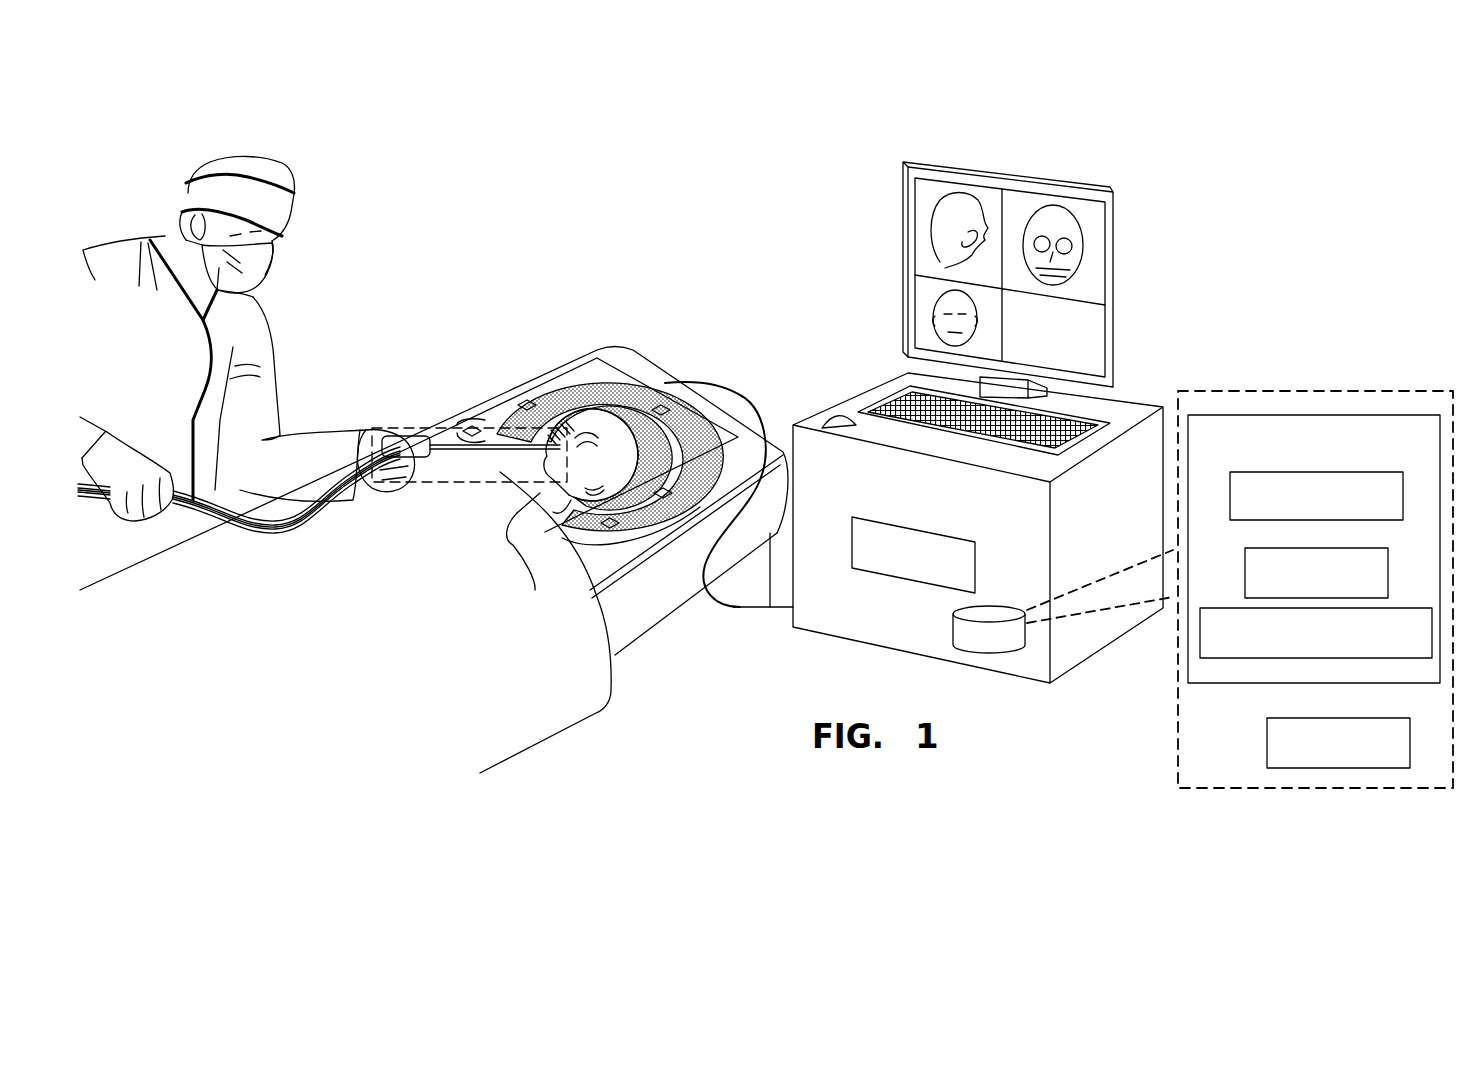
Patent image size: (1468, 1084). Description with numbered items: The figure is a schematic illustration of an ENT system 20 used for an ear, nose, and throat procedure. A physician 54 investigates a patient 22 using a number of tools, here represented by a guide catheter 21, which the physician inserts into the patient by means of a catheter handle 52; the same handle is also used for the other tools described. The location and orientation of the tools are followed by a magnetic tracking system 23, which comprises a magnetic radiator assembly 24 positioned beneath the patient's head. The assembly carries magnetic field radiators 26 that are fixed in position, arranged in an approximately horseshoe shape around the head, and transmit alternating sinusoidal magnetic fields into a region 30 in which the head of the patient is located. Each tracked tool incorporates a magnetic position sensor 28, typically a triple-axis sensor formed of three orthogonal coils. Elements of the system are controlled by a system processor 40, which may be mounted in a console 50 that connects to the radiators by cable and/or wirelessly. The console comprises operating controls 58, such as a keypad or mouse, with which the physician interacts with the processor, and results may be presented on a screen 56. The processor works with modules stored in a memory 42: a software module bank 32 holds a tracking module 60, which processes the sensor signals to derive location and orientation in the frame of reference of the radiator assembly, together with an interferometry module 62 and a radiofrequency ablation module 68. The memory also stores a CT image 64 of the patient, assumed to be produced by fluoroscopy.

The ENT system 20 is at (551, 246).
The guide catheter 21 is at (447, 440).
The patient 22 is at (535, 590).
The magnetic tracking system 23 is at (693, 680).
The magnetic radiator assembly 24 is at (612, 378).
The magnetic field radiators 26 is at (470, 423).
The magnetic position sensor 28 is at (553, 355).
The region 30 is at (545, 338).
The software module bank 32 is at (1372, 415).
The system processor 40 is at (912, 528).
The memory 42 is at (1005, 608).
The console 50 is at (1097, 637).
The catheter handle 52 is at (400, 440).
The physician 54 is at (200, 188).
The screen 56 is at (986, 178).
The operating controls 58 is at (892, 402).
The tracking module 60 is at (1377, 548).
The interferometry module 62 is at (1408, 607).
The CT image 64 is at (1267, 740).
The radiofrequency ablation module 68 is at (1393, 472).